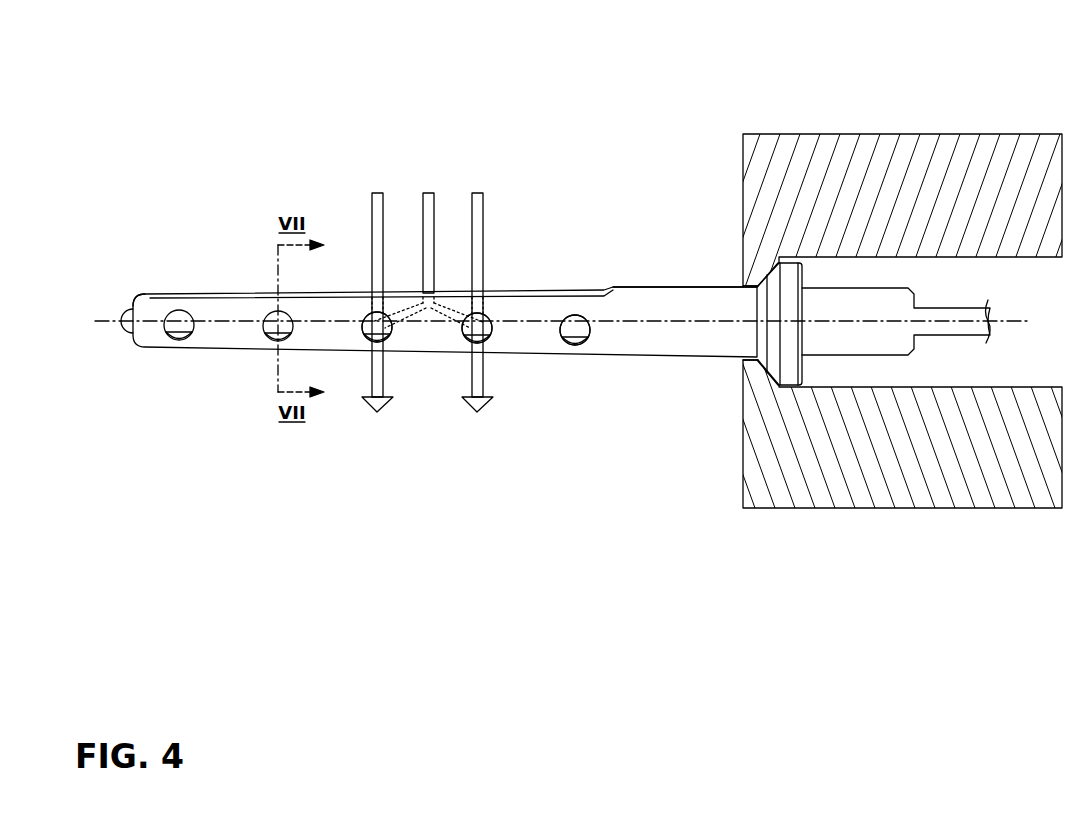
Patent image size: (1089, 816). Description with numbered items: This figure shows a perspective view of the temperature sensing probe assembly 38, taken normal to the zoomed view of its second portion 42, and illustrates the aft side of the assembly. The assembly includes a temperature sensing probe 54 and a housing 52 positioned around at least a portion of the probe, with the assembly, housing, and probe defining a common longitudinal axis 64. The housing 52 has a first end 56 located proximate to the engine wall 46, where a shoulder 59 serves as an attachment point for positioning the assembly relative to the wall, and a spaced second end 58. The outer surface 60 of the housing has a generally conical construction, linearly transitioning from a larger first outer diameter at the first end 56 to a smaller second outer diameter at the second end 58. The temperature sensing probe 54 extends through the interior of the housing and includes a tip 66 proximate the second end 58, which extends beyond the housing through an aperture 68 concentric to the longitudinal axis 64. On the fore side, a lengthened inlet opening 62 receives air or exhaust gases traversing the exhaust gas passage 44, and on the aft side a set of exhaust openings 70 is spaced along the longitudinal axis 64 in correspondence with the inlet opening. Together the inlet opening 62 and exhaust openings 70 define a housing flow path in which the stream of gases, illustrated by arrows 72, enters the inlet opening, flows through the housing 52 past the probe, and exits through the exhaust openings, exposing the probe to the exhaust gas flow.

The temperature sensing probe assembly 38 is at (265, 36).
The second portion 42 is at (664, 208).
The exhaust gas passage 44 is at (576, 518).
The engine wall 46 is at (912, 133).
The housing 52 is at (697, 340).
The temperature sensing probe 54 is at (180, 333).
The first end 56 is at (736, 278).
The second end 58 is at (156, 356).
The shoulder 59 is at (788, 262).
The outer surface 60 is at (659, 304).
The inlet opening 62 is at (537, 280).
The longitudinal axis 64 is at (102, 323).
The tip 66 is at (116, 300).
The aperture 68 is at (133, 292).
The exhaust openings 70 is at (398, 350).
The arrows 72 is at (378, 210).